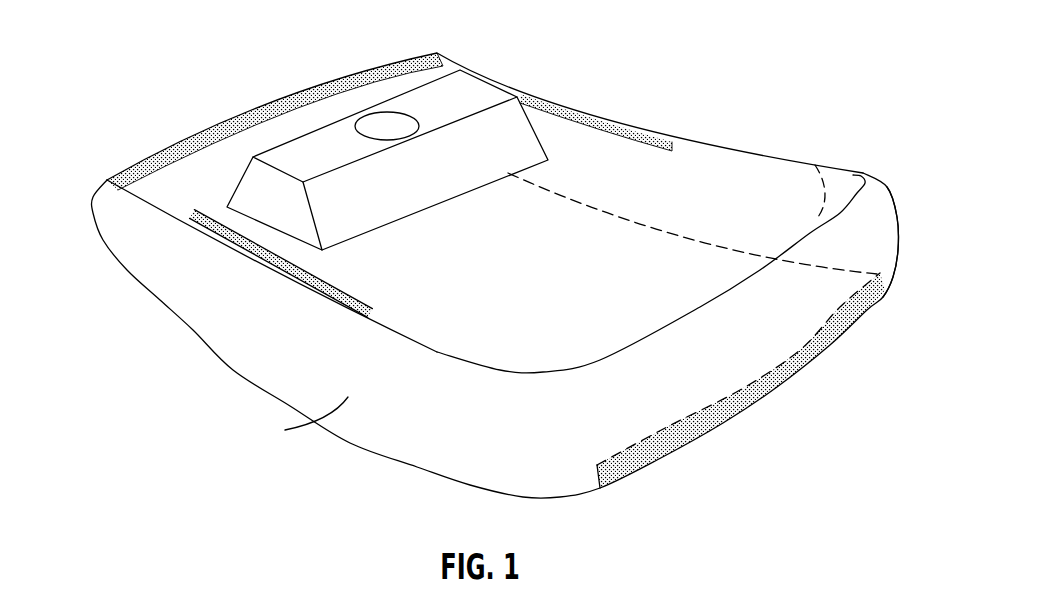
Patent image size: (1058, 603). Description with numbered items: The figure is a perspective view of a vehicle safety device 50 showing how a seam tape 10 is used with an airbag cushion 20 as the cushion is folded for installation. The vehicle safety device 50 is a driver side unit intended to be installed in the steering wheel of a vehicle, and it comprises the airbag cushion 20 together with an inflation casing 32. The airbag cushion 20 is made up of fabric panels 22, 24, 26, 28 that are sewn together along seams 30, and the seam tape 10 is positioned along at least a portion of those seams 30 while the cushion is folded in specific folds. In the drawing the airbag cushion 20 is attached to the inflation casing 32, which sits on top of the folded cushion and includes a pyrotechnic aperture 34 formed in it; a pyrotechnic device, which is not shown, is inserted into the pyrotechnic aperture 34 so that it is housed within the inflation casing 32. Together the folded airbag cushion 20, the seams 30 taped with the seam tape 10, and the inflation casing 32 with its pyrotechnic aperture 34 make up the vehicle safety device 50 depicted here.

The seam tape 10 is at (193, 143).
The airbag cushion 20 is at (110, 87).
The fabric panel 22 is at (663, 167).
The fabric panel 24 is at (890, 253).
The fabric panel 26 is at (302, 422).
The fabric panel 28 is at (815, 165).
The seam 30 is at (107, 180).
The inflation casing 32 is at (477, 97).
The pyrotechnic aperture 34 is at (377, 123).
The vehicle safety device 50 is at (138, 292).